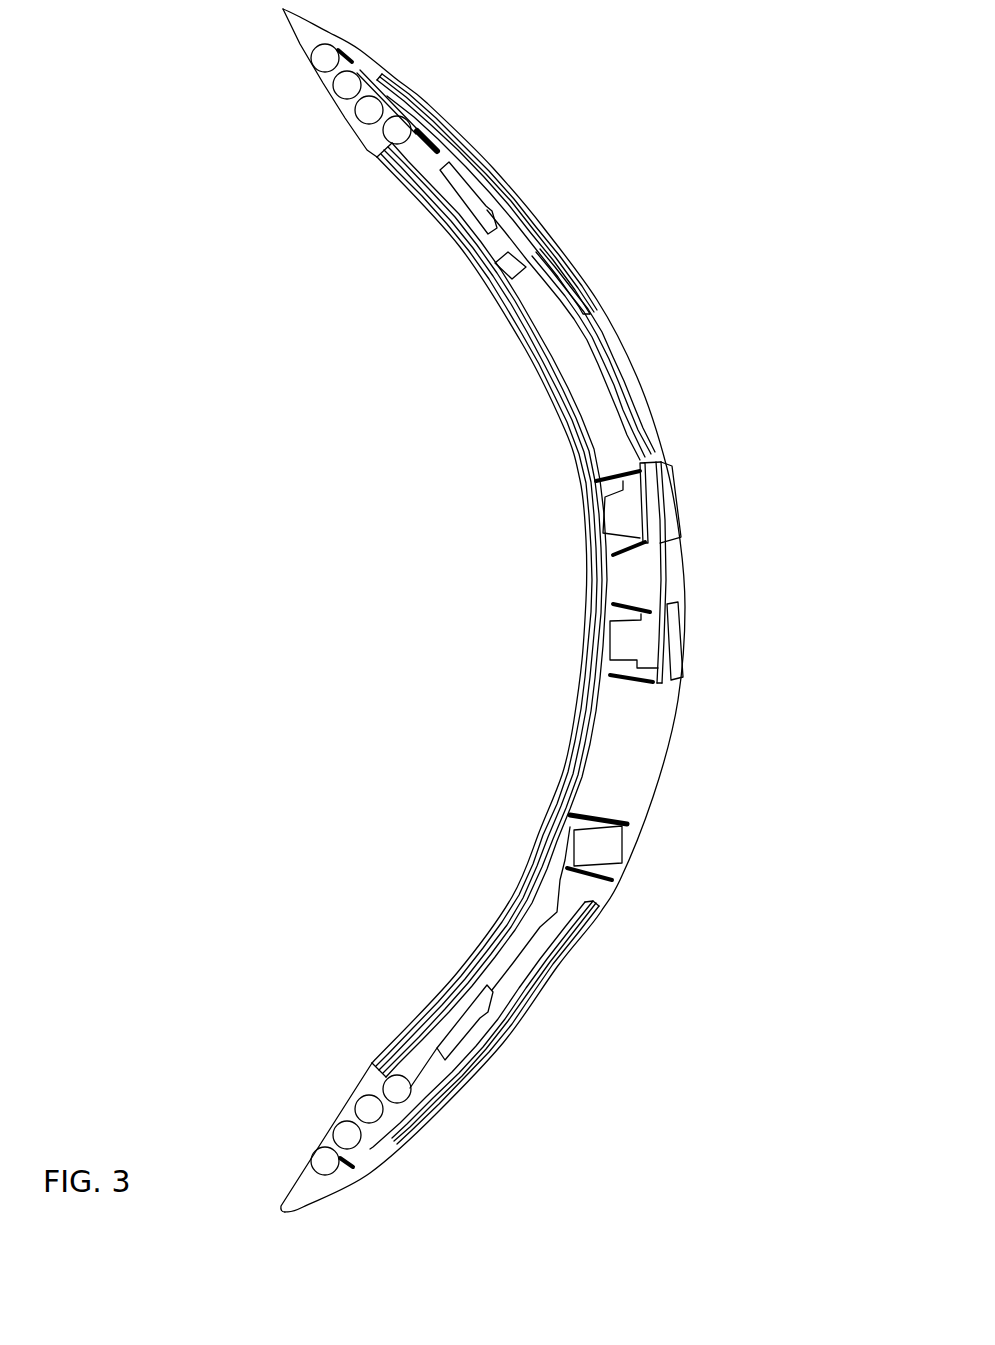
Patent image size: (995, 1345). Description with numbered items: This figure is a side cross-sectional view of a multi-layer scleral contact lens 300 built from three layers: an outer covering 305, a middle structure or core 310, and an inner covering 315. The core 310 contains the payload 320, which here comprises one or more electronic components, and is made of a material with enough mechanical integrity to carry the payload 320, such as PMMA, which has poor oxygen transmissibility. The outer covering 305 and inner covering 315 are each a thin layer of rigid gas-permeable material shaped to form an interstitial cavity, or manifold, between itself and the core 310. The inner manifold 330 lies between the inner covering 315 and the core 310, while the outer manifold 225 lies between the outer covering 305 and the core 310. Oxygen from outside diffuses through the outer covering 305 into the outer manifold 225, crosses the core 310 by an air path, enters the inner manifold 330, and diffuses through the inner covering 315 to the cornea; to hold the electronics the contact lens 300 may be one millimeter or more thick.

The contact lens 300 is at (764, 932).
The outer covering 305 is at (473, 143).
The outer manifold 225 is at (553, 227).
The core 310 is at (363, 140).
The inner covering 315 is at (453, 247).
The inner manifold 330 is at (507, 318).
The payload 320 is at (640, 690).